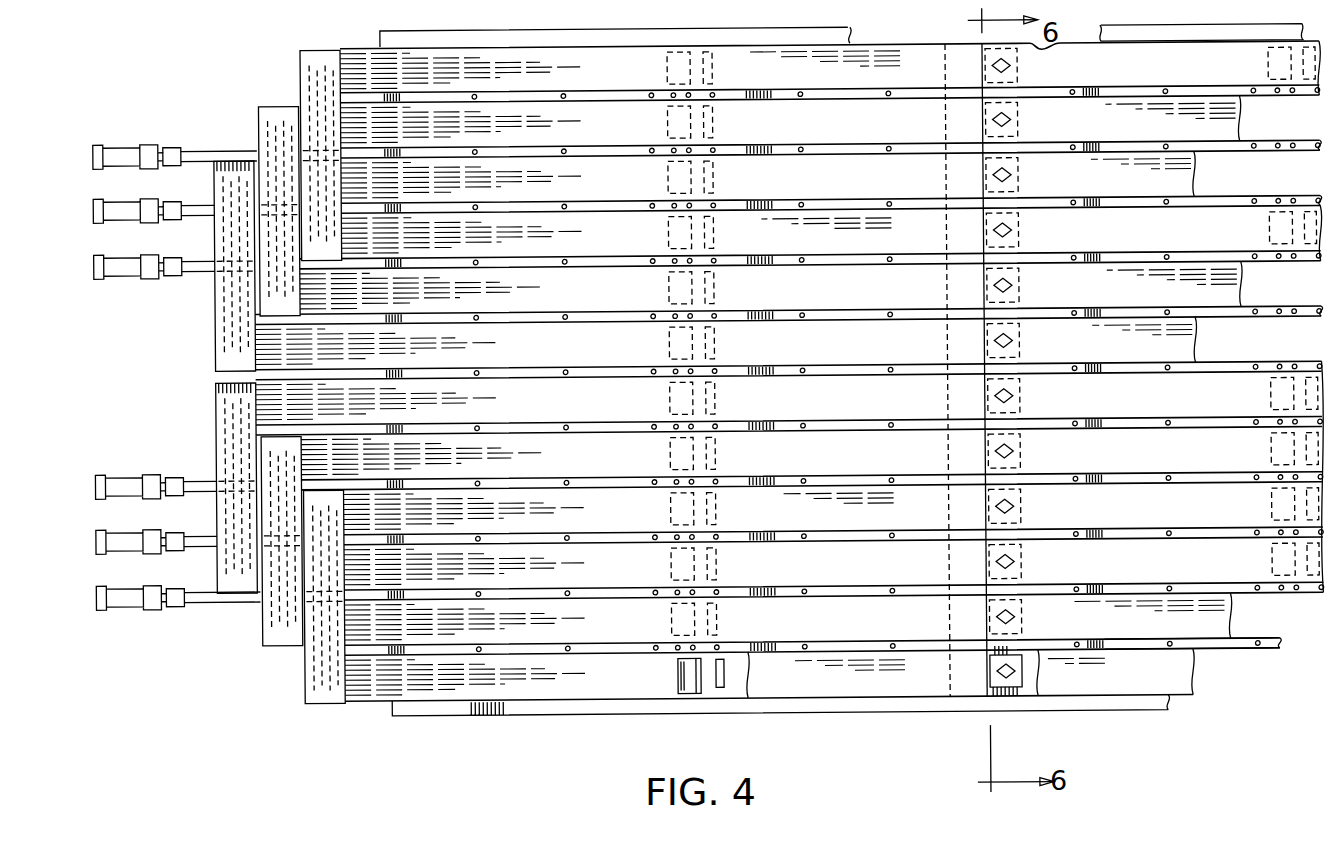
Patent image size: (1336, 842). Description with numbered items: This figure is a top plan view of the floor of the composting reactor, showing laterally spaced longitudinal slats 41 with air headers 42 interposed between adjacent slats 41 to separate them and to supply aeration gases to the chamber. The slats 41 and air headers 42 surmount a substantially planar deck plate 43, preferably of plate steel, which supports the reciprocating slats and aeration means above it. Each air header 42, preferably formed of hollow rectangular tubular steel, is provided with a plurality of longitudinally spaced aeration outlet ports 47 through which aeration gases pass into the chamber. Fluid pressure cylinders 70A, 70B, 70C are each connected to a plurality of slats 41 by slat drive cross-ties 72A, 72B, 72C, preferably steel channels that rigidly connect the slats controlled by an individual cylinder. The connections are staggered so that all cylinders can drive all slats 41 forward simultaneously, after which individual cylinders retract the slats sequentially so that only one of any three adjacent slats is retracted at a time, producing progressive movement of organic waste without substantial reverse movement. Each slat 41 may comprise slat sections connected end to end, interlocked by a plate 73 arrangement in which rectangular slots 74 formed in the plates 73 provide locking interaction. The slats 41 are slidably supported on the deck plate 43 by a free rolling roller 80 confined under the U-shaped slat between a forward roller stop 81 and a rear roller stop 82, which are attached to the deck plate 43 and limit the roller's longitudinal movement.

The slat 41 is at (1192, 622).
The air header 42 is at (1263, 648).
The deck plate 43 is at (430, 712).
The aeration outlet port 47 is at (893, 647).
The cylinder 70A is at (132, 482).
The cylinder 70B is at (123, 548).
The cylinder 70C is at (127, 598).
The slat drive cross-tie 72A is at (225, 402).
The slat drive cross-tie 72B is at (275, 638).
The slat drive cross-tie 72C is at (323, 690).
The plate 73 is at (1025, 665).
The rectangular slot 74 is at (1003, 670).
The roller 80 is at (697, 685).
The forward roller stop 81 is at (672, 685).
The rear roller stop 82 is at (720, 673).